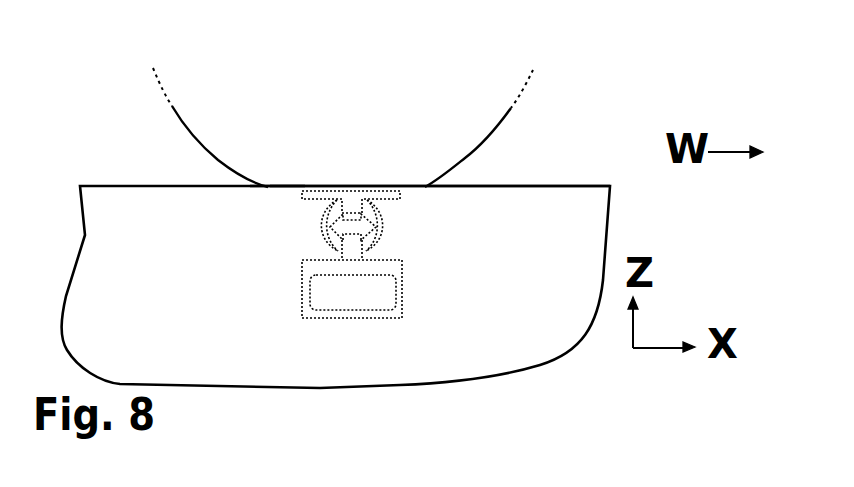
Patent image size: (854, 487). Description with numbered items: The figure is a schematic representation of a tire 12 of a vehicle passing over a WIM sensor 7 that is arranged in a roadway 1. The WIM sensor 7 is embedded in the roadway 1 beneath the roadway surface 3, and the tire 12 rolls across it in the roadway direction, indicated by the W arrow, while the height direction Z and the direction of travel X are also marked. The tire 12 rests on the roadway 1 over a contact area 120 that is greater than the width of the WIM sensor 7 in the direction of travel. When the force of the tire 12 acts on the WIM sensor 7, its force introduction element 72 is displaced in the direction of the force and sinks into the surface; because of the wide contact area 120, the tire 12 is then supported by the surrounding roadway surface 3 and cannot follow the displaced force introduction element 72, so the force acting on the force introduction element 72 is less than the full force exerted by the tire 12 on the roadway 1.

The roadway 1 is at (121, 149).
The tire 12 is at (492, 122).
The roadway surface 3 is at (497, 183).
The contact area 120 is at (280, 189).
The force introduction element 72 is at (398, 188).
The WIM sensor 7 is at (428, 233).